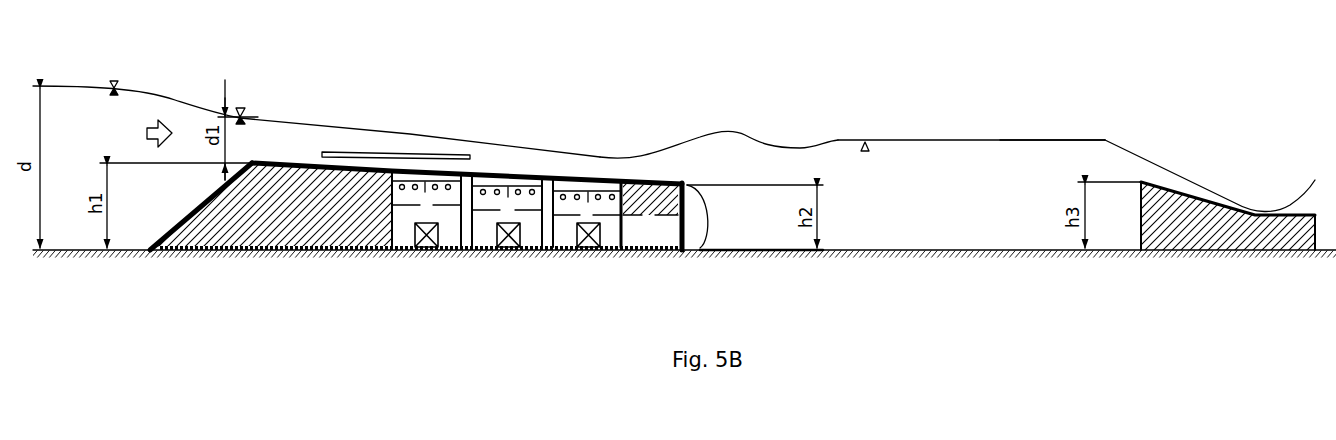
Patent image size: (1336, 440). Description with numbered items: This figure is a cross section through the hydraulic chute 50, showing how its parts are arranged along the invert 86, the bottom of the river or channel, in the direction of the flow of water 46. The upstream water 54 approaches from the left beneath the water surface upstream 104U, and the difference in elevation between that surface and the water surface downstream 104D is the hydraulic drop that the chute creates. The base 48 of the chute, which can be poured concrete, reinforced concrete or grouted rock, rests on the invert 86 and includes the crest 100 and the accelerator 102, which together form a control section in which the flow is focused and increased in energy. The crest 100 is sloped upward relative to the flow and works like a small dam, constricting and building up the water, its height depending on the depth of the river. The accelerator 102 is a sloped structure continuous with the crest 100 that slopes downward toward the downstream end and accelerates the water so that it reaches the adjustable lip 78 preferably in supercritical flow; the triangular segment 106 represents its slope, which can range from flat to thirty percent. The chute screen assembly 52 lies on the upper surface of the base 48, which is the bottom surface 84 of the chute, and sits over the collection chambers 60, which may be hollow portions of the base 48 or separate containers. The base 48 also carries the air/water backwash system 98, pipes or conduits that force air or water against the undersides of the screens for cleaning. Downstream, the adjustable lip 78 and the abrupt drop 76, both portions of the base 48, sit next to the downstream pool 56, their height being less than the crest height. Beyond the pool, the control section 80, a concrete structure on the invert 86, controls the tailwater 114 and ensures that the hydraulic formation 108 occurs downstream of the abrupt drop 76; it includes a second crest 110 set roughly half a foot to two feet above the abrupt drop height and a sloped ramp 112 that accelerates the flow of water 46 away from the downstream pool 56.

The upstream water body 54 is at (88, 135).
The water surface upstream 104U is at (114, 79).
The flow of water 46 is at (158, 117).
The invert 86 is at (88, 253).
The base 48 is at (238, 236).
The crest 100 is at (253, 162).
The accelerator 102 is at (306, 162).
The hydraulic chute 50 is at (354, 150).
The bottom surface 84 is at (381, 177).
The triangular segment 106 is at (456, 157).
The chute screen assembly 52 is at (573, 181).
The air/water backwash system 98 is at (418, 196).
The collection chambers 60 is at (578, 255).
The adjustable lip 78 is at (652, 183).
The abrupt drop 76 is at (713, 216).
The hydraulic formation 108 is at (711, 131).
The water surface downstream 104D is at (854, 140).
The downstream pool 56 is at (962, 168).
The tailwater 114 is at (1036, 140).
The second crest 110 is at (1139, 182).
The sloped ramp 112 is at (1178, 190).
The control section 80 is at (1141, 253).